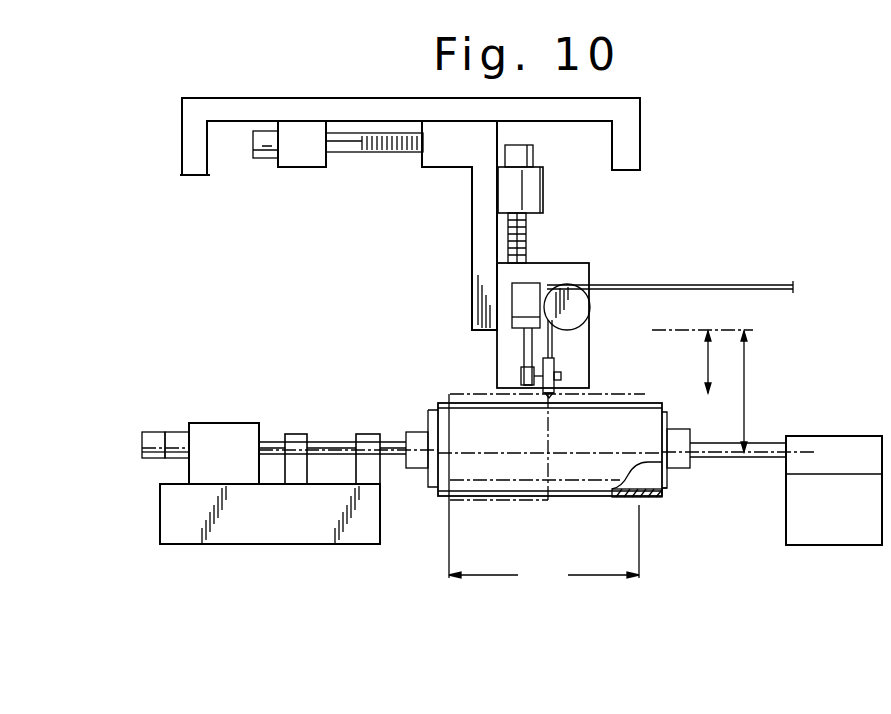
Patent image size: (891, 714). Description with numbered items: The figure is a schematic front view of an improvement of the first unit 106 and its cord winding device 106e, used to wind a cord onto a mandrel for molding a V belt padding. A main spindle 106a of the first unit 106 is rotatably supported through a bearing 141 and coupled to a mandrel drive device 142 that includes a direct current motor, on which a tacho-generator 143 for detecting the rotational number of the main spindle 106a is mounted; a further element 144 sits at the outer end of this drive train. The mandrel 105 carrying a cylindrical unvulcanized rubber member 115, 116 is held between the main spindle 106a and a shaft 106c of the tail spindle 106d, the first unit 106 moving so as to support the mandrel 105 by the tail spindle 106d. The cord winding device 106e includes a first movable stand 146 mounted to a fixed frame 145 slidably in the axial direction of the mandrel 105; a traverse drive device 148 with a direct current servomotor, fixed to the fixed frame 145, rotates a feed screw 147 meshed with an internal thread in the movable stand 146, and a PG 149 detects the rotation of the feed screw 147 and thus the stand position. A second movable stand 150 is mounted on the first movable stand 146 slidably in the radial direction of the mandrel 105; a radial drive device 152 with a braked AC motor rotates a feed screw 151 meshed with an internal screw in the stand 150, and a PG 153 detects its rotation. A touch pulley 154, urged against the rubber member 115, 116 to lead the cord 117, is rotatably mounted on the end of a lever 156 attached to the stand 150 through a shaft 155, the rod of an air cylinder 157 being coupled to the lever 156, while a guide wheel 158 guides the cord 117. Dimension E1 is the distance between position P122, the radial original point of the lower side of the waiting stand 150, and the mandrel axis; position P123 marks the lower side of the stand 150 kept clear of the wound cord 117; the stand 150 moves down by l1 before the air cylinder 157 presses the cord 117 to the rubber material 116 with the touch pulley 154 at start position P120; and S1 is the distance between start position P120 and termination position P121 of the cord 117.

The first unit 106 is at (402, 580).
The main spindle 106a is at (392, 460).
The tailstock shaft 106c is at (768, 460).
The tail spindle 106d is at (830, 546).
The cord winding device 106e is at (665, 147).
The mandrel 105 is at (670, 478).
The cylindrical unvulcanized rubber member 115 is at (650, 500).
The cylindrical unvulcanized rubber material 116 is at (623, 492).
The cord 117 is at (732, 283).
The bearing 141 is at (357, 433).
The mandrel drive device 142 is at (242, 422).
The tacho-generator 143 is at (180, 431).
The drive motor 144 is at (156, 431).
The fixed frame 145 is at (190, 166).
The first movable stand 146 is at (435, 168).
The feed screw 147 is at (340, 153).
The traverse drive device 148 is at (298, 167).
The PG 149 is at (262, 150).
The second movable stand 150 is at (589, 264).
The feed screw 151 is at (528, 247).
The radial drive device 152 is at (544, 200).
The PG 153 is at (535, 158).
The touch pulley 154 is at (555, 365).
The shaft 155 is at (561, 376).
The lever 156 is at (521, 373).
The air cylinder 157 is at (511, 297).
The guide wheel 158 is at (590, 310).
The start position P120 is at (449, 585).
The termination position P121 is at (639, 585).
The waiting position of lower side of movable stand P122 is at (755, 331).
The lower side position of movable stand P123 is at (722, 398).
The distance between start and termination positions S1 is at (544, 575).
The distance between waiting position and mandrel axis E1 is at (716, 398).
The downward movement distance of movable stand l1 is at (696, 362).